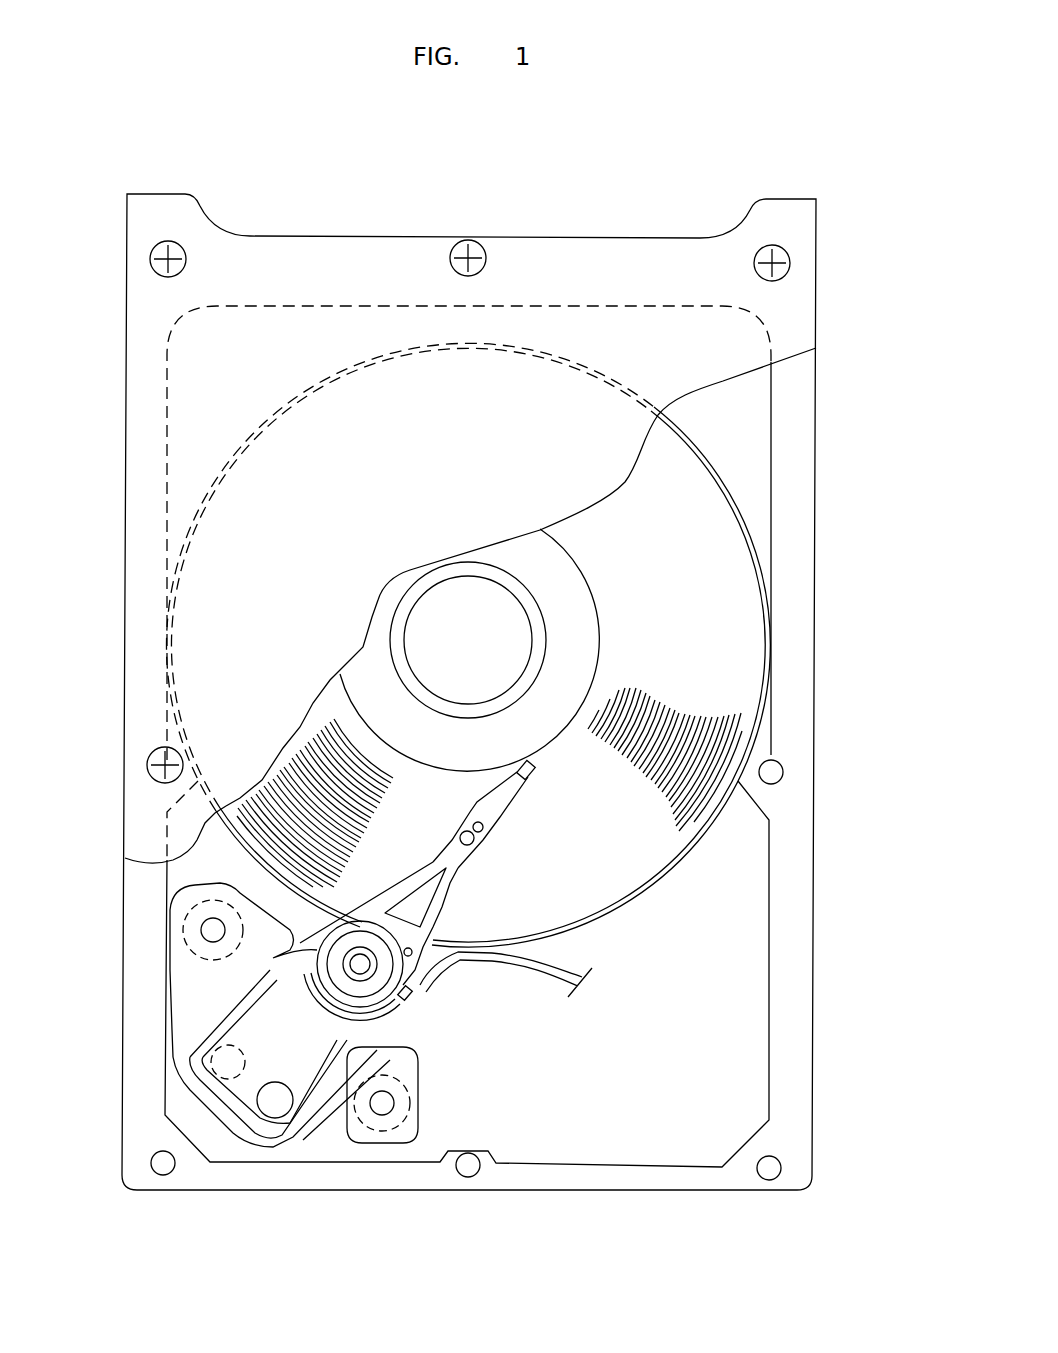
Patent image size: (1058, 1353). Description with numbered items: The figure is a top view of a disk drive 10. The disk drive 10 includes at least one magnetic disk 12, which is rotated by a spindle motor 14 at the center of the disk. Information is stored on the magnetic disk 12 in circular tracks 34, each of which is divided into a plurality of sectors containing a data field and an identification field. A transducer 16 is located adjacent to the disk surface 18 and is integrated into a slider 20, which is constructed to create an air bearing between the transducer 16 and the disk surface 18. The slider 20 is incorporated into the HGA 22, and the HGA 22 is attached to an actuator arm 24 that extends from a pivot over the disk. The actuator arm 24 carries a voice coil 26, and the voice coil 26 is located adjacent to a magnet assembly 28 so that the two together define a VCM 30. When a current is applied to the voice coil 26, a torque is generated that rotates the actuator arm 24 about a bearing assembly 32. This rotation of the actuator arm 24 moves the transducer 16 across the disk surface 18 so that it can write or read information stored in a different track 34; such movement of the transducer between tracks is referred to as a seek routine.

The disk drive 10 is at (652, 175).
The magnetic disk 12 is at (727, 577).
The spindle motor 14 is at (443, 617).
The transducer 16 is at (532, 778).
The disk surface 18 is at (712, 664).
The slider 20 is at (505, 800).
The HGA 22 is at (460, 904).
The actuator arm 24 is at (263, 982).
The voice coil 26 is at (197, 1052).
The magnet assembly 28 is at (207, 997).
The VCM 30 is at (328, 1120).
The bearing assembly 32 is at (373, 977).
The circular tracks 34 is at (325, 758).